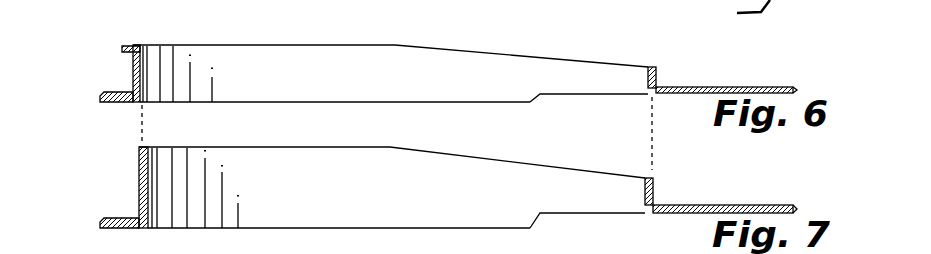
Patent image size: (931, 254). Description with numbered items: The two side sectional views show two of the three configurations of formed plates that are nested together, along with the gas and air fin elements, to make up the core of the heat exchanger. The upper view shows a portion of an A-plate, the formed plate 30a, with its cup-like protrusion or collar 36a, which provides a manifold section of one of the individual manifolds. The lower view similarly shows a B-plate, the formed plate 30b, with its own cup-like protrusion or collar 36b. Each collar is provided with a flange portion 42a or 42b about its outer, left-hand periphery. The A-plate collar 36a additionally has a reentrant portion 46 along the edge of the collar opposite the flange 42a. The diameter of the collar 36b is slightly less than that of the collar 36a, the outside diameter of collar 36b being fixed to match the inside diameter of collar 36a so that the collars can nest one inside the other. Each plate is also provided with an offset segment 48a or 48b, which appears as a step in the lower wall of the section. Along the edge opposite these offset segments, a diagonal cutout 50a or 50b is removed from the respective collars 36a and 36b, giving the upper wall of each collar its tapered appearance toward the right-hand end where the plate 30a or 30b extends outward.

In FIG. 6, the formed plate 30a is at (703, 86).
In FIG. 7, the formed plate 30b is at (696, 204).
In FIG. 6, the collar 36a is at (297, 44).
In FIG. 7, the collar 36b is at (294, 147).
In FIG. 6, the flange portion 42a is at (104, 100).
In FIG. 7, the flange portion 42b is at (110, 228).
In FIG. 6, the reentrant portion 46 is at (124, 47).
In FIG. 6, the offset segment 48a is at (563, 97).
In FIG. 7, the offset segment 48b is at (553, 216).
In FIG. 6, the diagonal cutout 50a is at (490, 51).
In FIG. 7, the diagonal cutout 50b is at (487, 159).